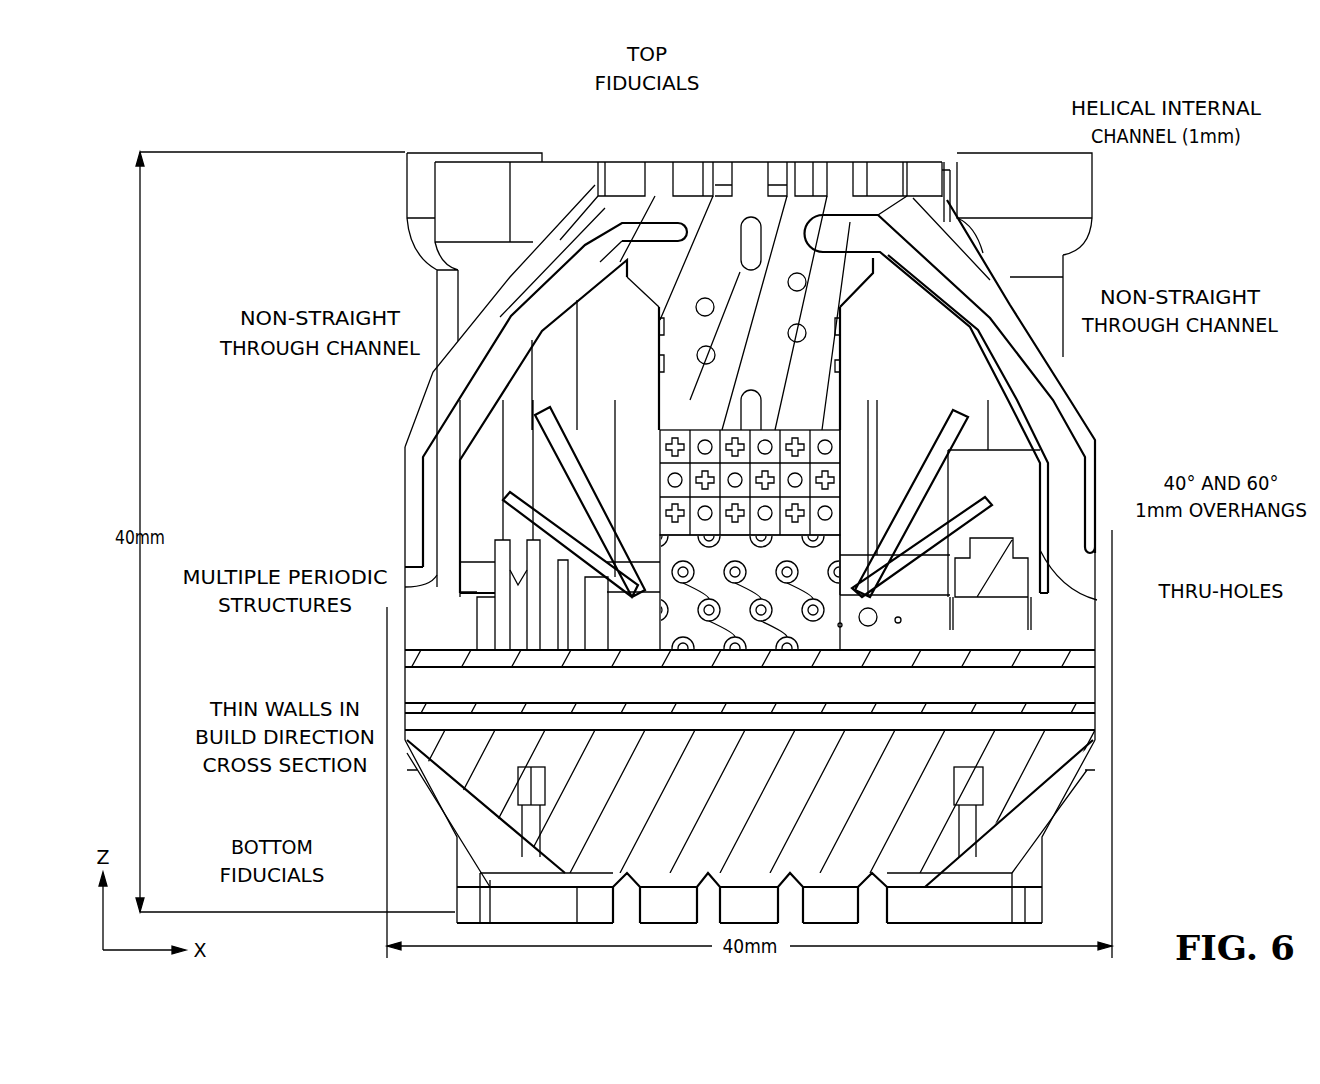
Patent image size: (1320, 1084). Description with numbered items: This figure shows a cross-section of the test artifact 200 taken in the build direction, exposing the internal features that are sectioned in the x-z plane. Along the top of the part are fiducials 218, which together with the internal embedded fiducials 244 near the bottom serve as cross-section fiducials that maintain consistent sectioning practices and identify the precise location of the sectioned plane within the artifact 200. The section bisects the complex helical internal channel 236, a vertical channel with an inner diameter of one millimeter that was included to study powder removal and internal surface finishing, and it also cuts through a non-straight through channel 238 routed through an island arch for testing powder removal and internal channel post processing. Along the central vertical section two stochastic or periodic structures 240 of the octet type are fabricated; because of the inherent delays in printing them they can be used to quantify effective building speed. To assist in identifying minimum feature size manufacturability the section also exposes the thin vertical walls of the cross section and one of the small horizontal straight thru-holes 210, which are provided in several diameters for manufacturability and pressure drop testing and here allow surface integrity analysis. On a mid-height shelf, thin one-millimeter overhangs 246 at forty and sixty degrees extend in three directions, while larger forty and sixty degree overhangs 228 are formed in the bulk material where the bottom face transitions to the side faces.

The artifact 200 is at (452, 108).
The fiducials 218 is at (660, 170).
The helical internal channel 236 is at (795, 273).
The thin 40° and 60° overhangs 246 is at (460, 407).
The non-straight through channel 238 is at (1050, 412).
The periodic structures 240 is at (665, 482).
The 40° and 60° overhangs 228 is at (495, 635).
The internal fiducials 244 is at (547, 785).
The straight thru-holes 210 is at (843, 624).